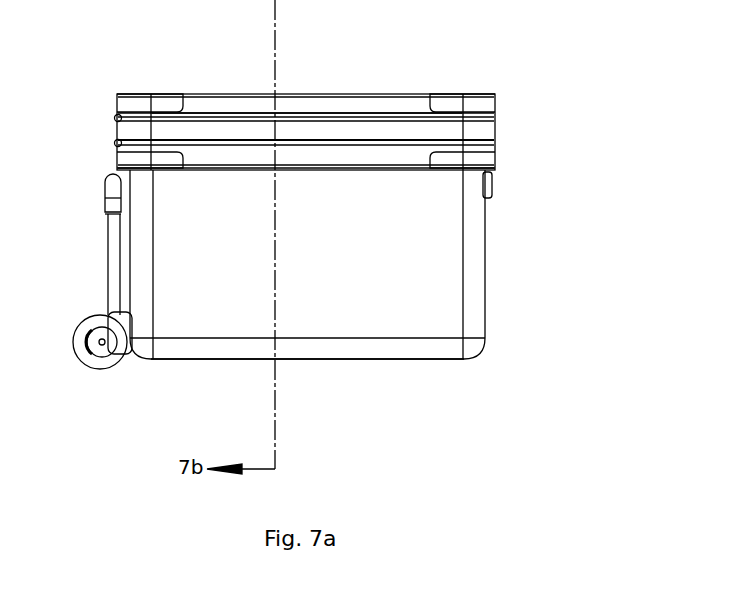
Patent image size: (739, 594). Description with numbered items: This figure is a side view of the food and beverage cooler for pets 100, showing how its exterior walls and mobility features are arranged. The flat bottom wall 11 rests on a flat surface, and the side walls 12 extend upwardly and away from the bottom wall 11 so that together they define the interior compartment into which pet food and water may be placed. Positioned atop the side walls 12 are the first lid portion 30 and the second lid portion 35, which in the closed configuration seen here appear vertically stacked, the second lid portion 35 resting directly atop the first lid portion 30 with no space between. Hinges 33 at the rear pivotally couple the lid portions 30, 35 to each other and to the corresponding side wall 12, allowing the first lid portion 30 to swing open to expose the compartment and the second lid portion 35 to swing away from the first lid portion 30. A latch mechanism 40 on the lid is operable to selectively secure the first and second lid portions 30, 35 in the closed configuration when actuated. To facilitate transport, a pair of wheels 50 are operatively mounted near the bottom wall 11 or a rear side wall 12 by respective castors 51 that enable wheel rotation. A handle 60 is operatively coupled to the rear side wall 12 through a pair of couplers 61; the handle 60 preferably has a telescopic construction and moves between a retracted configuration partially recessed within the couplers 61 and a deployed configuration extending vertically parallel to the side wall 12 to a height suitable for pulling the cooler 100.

The food and beverage cooler for pets 100 is at (530, 72).
The first lid portion 30 is at (400, 130).
The second lid portion 35 is at (340, 108).
The hinges 33 is at (115, 118).
The latch mechanism 40 is at (512, 203).
The side walls 12 is at (487, 286).
The bottom wall 11 is at (360, 360).
The handle 60 is at (110, 185).
The couplers 61 is at (108, 270).
The wheels 50 is at (82, 346).
The castors 51 is at (113, 358).